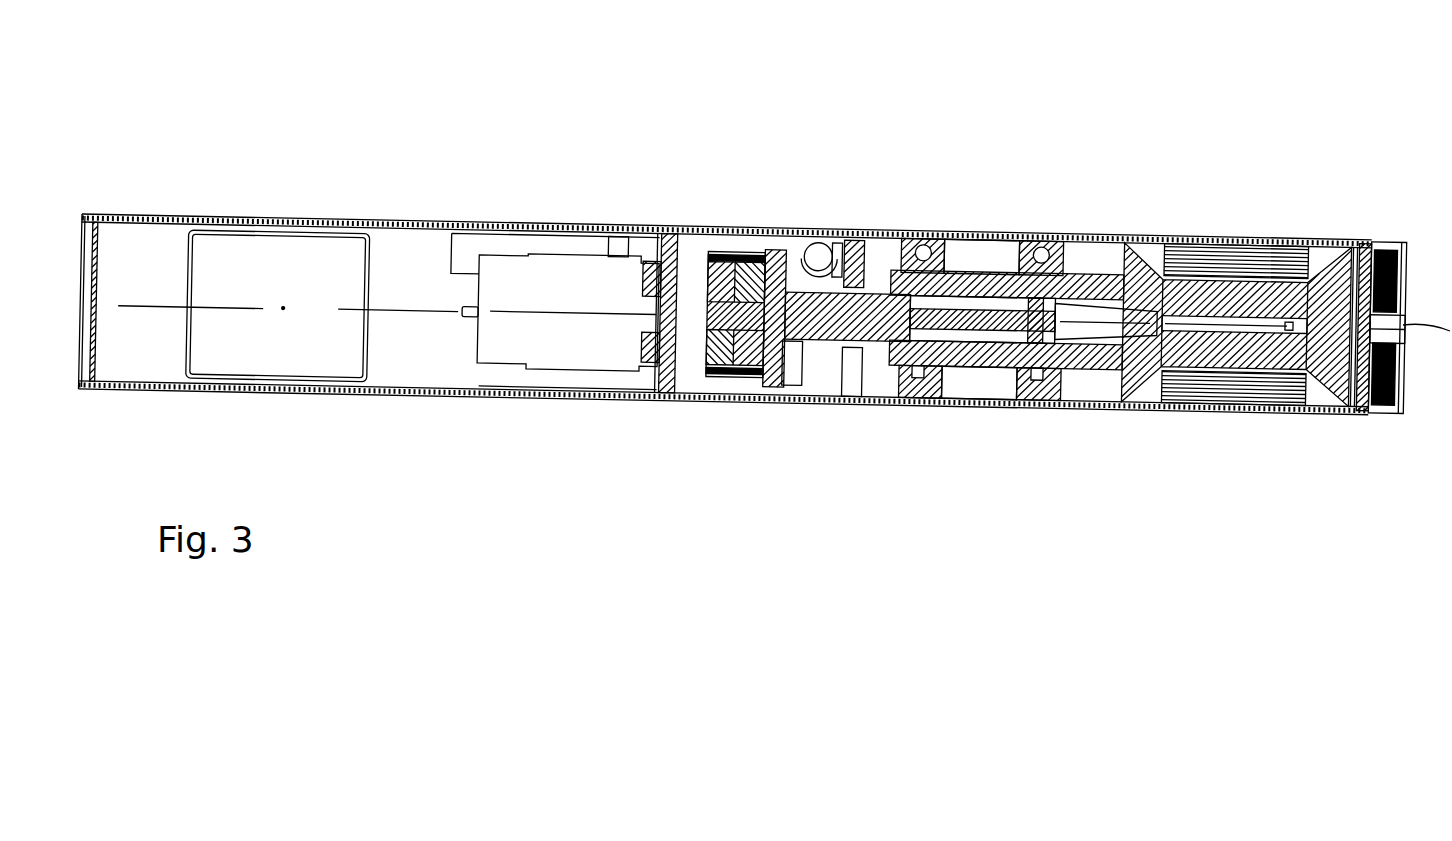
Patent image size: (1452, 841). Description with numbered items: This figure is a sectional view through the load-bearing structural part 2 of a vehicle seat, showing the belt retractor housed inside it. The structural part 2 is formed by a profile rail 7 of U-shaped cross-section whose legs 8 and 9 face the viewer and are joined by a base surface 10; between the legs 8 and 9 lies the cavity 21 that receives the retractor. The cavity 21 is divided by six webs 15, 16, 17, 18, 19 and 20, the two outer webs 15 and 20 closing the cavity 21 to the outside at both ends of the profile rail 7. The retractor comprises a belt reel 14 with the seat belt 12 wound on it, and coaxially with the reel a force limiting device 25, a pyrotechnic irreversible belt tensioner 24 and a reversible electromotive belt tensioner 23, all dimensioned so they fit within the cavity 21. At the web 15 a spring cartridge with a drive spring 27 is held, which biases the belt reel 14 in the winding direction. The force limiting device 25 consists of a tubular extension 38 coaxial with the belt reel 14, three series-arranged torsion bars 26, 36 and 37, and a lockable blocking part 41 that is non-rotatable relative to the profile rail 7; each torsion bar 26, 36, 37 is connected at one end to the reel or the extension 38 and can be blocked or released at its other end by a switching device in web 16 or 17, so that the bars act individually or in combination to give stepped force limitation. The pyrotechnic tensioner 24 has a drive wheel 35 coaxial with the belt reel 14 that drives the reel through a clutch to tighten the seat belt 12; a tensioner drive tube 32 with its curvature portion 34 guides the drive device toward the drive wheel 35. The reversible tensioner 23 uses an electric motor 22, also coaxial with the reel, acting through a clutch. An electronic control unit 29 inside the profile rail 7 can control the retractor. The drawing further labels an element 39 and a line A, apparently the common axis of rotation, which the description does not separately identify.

The load-bearing structural part 2 is at (582, 207).
The profile rail 7 is at (365, 218).
The leg 8 is at (421, 222).
The leg 9 is at (428, 395).
The base surface 10 is at (403, 285).
The seat belt 12 is at (1193, 262).
The belt reel 14 is at (1258, 300).
The outer web 15 is at (1357, 393).
The web 16 is at (1043, 245).
The web 17 is at (920, 245).
The web 18 is at (852, 237).
The web 19 is at (675, 237).
The outer web 20 is at (100, 218).
The cavity 21 is at (585, 380).
The electric motor 22 is at (548, 290).
The reversible electromotive belt tensioner 23 is at (606, 248).
The pyrotechnic irreversible belt tensioner 24 is at (821, 270).
The force limiting device 25 is at (976, 265).
The torsion bar 26 is at (1105, 343).
The drive spring 27 is at (1398, 240).
The electronic control unit 29 is at (272, 343).
The tensioner drive tube 32 is at (812, 252).
The curvature portion 34 is at (837, 260).
The drive wheel 35 is at (828, 365).
The torsion bar 36 is at (968, 318).
The torsion bar 37 is at (872, 320).
The tubular extension 38 is at (1075, 335).
The guide element 39 is at (1062, 348).
The blocking part 41 is at (780, 328).
The axis A is at (1232, 335).